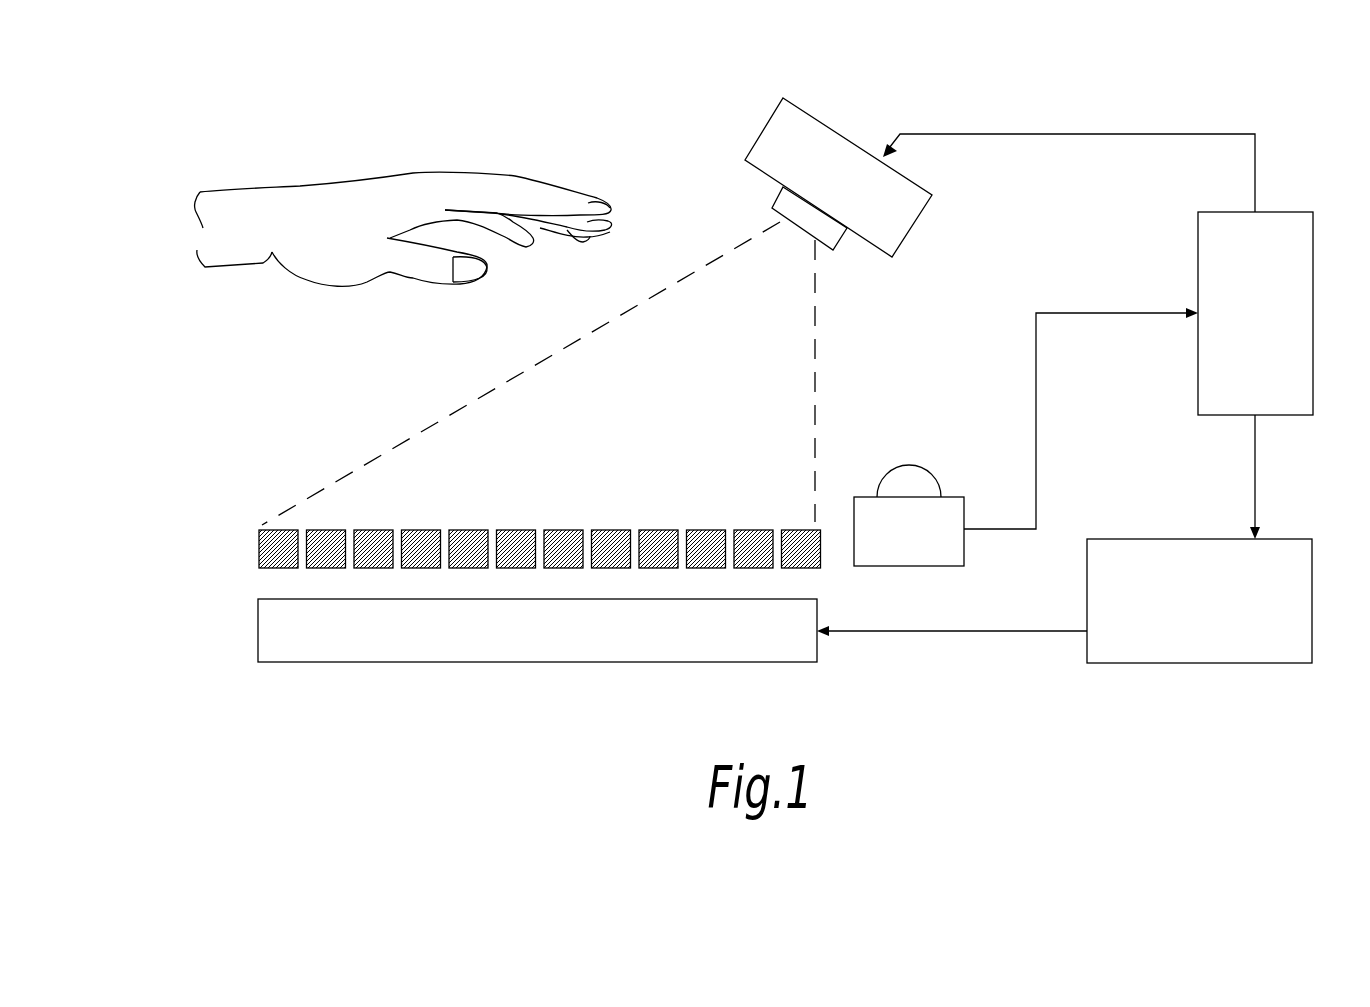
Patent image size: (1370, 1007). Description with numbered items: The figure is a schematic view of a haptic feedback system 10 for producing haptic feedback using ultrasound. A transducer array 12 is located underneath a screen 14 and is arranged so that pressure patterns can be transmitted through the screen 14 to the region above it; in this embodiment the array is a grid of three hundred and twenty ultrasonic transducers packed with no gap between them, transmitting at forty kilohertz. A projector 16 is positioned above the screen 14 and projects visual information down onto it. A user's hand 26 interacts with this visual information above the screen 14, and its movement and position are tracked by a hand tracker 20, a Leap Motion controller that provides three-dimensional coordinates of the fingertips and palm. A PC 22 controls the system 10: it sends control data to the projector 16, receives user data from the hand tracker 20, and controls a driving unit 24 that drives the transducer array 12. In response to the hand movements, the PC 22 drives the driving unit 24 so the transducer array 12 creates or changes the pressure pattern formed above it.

The haptic feedback system 10 is at (628, 130).
The transducer array 12 is at (397, 643).
The screen 14 is at (270, 552).
The projector 16 is at (773, 130).
The hand tracker 20 is at (943, 520).
The PC 22 is at (1280, 232).
The driving unit 24 is at (1170, 633).
The user's hand 26 is at (352, 192).